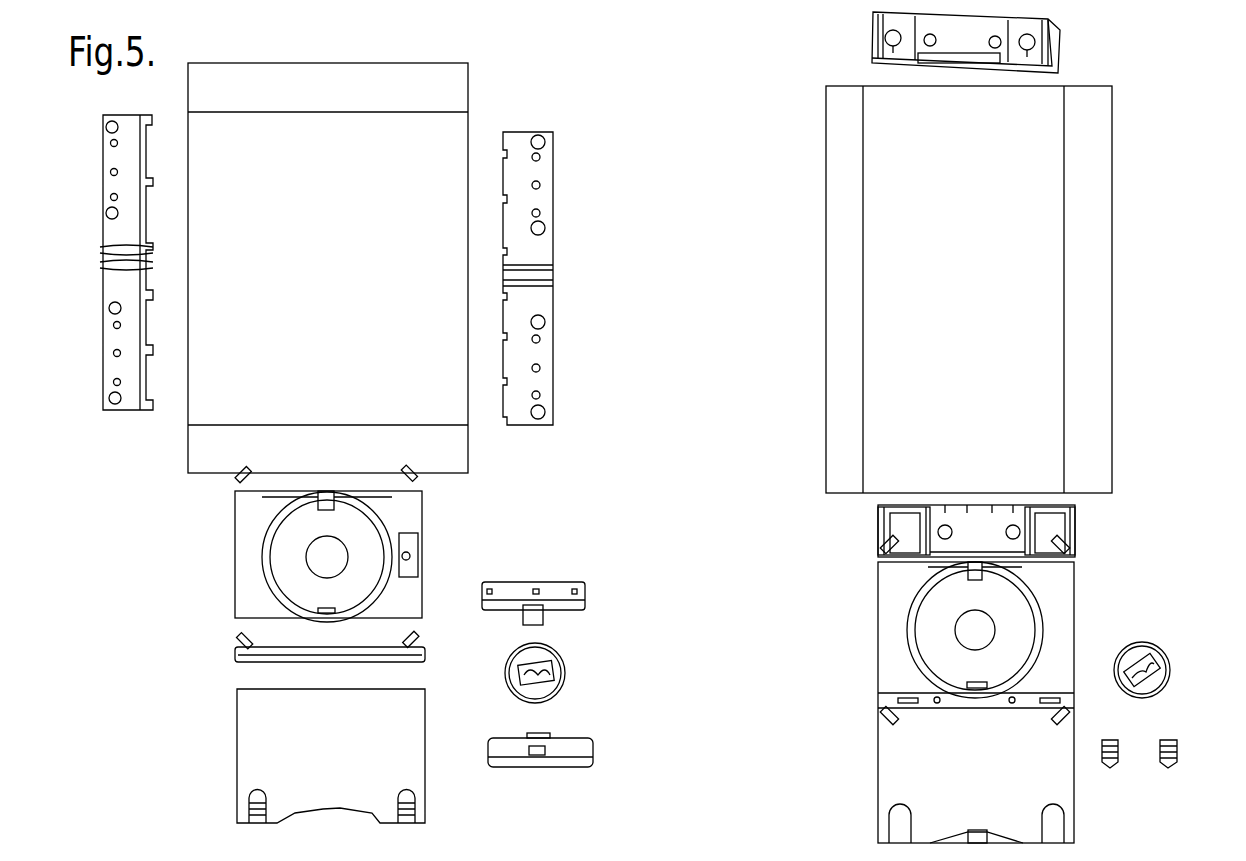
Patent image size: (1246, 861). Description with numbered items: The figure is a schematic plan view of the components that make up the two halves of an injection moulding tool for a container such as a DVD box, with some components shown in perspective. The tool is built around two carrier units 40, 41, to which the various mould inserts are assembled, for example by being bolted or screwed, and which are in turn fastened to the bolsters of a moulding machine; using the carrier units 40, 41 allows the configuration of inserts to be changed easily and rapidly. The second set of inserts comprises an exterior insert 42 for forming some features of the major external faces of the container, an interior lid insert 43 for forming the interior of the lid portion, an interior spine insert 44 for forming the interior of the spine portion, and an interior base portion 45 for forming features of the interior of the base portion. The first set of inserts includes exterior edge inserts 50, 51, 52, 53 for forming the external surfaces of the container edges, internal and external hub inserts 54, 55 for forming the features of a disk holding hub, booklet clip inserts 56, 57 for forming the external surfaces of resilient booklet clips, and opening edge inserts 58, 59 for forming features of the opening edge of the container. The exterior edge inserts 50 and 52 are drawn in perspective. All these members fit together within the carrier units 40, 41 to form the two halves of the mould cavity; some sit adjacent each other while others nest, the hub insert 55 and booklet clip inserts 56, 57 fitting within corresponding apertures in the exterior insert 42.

The carrier unit 40 is at (313, 70).
The carrier unit 41 is at (832, 136).
The exterior insert 42 is at (1075, 603).
The interior lid insert 43 is at (237, 758).
The interior spine insert 44 is at (235, 652).
The interior base portion 45 is at (235, 548).
The exterior edge insert 50 is at (112, 185).
The exterior edge insert 51 is at (540, 245).
The exterior edge insert 52 is at (872, 35).
The exterior edge insert 53 is at (1060, 538).
The hub insert 54 is at (565, 671).
The hub insert 55 is at (1160, 672).
The booklet clip insert 56 is at (1112, 770).
The booklet clip insert 57 is at (1172, 770).
The opening edge insert 58 is at (585, 597).
The opening edge insert 59 is at (593, 748).